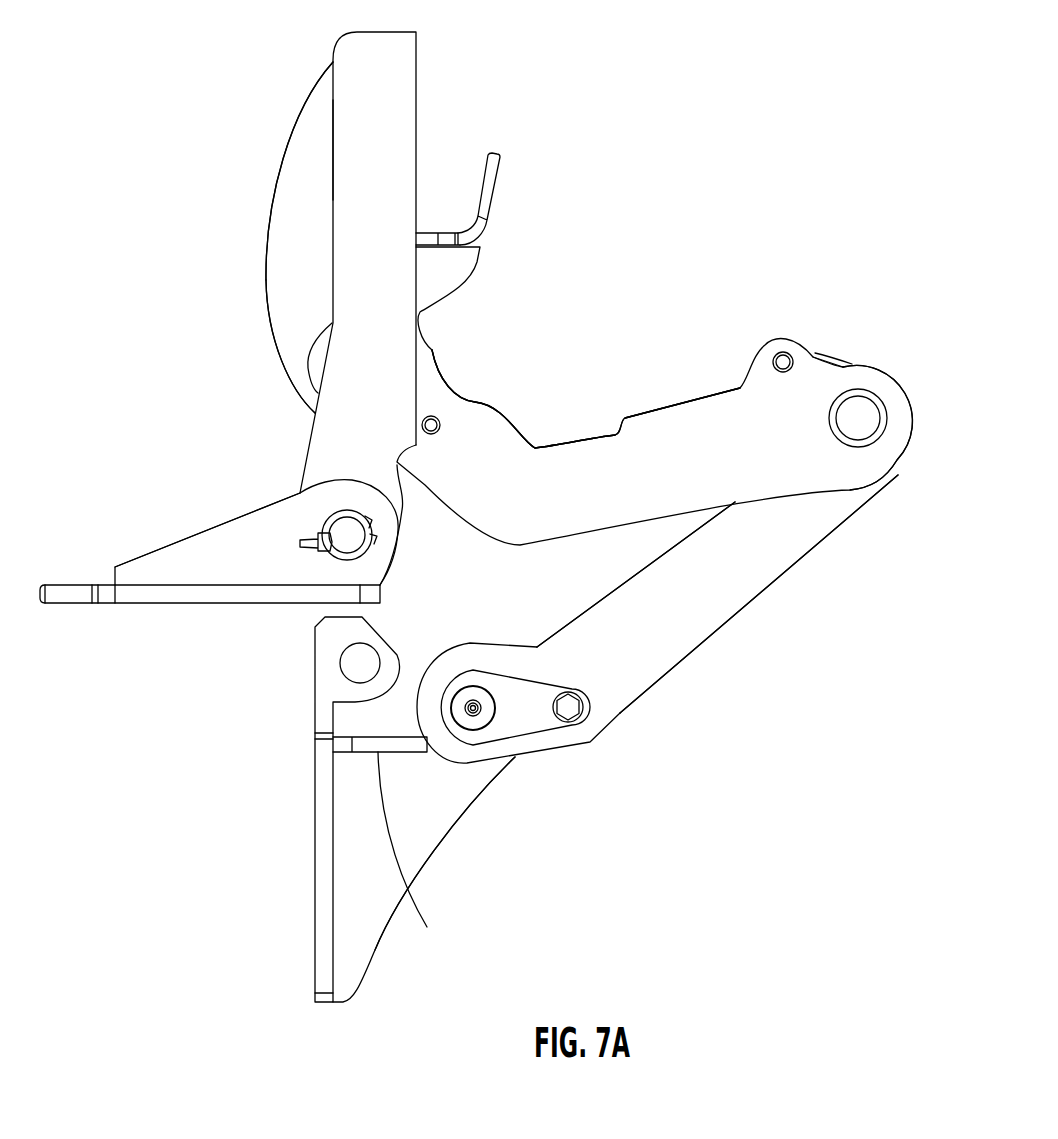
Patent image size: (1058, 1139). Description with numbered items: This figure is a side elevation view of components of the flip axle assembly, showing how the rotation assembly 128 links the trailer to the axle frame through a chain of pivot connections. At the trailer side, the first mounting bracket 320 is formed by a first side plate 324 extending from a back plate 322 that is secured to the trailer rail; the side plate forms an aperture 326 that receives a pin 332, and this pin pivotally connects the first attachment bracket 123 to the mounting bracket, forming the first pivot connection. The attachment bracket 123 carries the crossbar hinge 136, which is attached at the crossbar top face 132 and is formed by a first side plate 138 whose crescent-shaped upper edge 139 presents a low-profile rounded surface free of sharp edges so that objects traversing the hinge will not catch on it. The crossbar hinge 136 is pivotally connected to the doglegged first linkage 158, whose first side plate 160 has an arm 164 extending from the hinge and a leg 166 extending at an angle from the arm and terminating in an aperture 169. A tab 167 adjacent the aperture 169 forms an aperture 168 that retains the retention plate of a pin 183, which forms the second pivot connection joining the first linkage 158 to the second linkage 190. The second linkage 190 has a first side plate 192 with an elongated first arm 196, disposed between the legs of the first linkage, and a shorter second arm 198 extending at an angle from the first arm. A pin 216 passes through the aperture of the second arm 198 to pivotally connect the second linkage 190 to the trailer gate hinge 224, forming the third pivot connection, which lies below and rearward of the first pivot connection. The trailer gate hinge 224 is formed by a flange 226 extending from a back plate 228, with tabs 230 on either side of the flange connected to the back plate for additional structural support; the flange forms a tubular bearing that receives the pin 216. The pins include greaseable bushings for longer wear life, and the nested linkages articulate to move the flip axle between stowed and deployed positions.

The first attachment bracket 123 is at (390, 108).
The rotation assembly 128 is at (636, 170).
The top face 132 is at (320, 149).
The crossbar hinge 136 is at (256, 98).
The first side plate 138 is at (281, 214).
The crescent-shaped upper edge 139 is at (253, 282).
The first linkage 158 is at (572, 408).
The first side plate 160 is at (637, 443).
The arm 164 is at (465, 423).
The leg 166 is at (705, 437).
The tab 167 is at (807, 363).
The aperture 168 is at (780, 351).
The aperture 169 is at (855, 448).
The pin 183 is at (865, 417).
The second linkage 190 is at (735, 662).
The first side plate 192 is at (752, 565).
The elongated first arm 196 is at (662, 645).
The second arm 198 is at (490, 660).
The pin 216 is at (482, 718).
The trailer gate hinge 224 is at (452, 888).
The flange 226 is at (428, 813).
The back plate 228 is at (313, 837).
The tab 230 is at (412, 856).
The first mounting bracket 320 is at (155, 488).
The back plate 322 is at (74, 592).
The first side plate 324 is at (240, 538).
The aperture 326 is at (365, 548).
The pin 332 is at (342, 538).